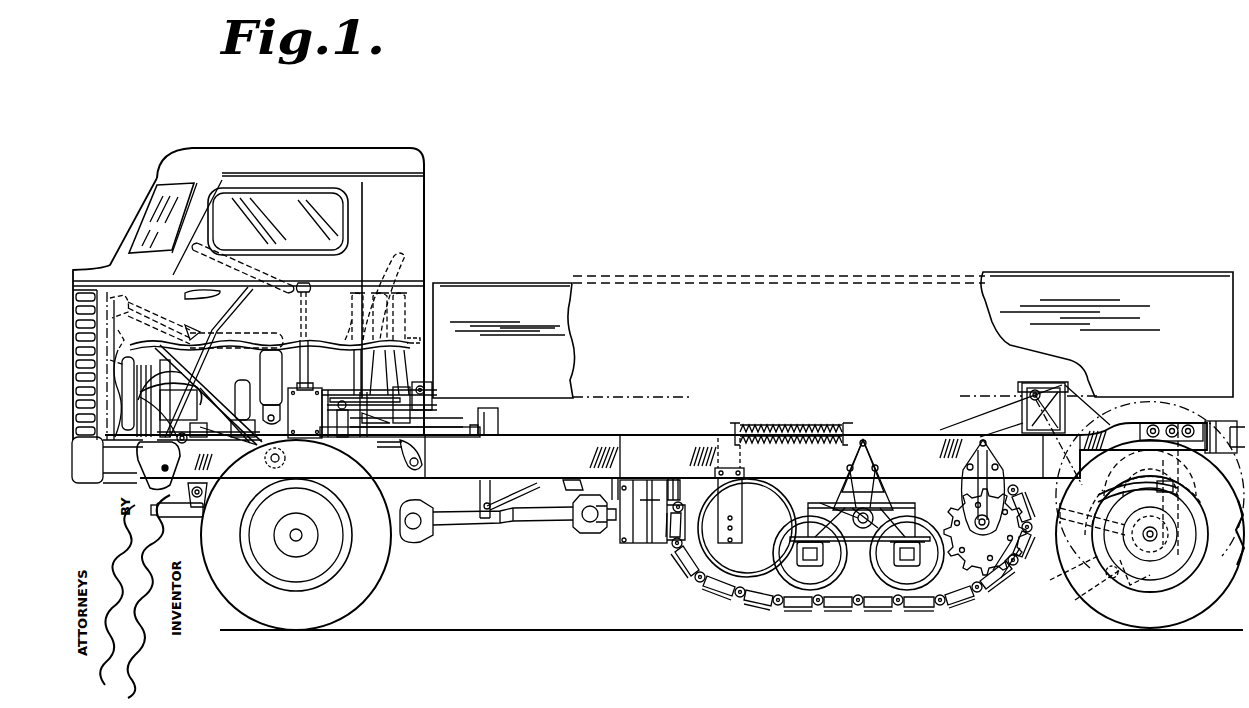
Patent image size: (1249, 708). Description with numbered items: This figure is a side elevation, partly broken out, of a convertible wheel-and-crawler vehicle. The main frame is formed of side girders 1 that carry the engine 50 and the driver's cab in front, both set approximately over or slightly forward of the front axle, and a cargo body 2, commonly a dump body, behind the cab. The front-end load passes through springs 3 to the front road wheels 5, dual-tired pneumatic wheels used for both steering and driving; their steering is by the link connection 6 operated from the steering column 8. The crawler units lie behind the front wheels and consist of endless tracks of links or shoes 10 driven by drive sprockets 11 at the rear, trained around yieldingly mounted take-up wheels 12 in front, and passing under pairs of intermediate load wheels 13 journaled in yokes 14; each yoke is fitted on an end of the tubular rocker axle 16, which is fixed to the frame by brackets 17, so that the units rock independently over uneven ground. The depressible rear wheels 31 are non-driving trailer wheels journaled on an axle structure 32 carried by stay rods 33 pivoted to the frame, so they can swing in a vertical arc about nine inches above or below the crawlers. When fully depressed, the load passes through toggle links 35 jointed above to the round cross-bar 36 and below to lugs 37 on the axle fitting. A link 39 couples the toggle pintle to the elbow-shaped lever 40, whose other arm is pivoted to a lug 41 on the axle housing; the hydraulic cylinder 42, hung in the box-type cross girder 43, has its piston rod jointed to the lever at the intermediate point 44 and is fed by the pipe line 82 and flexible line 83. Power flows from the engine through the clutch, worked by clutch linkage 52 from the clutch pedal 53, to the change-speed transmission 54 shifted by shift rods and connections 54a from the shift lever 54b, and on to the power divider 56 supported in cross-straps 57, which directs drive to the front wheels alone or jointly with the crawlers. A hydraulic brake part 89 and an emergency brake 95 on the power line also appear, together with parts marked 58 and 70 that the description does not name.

The side girders 1 is at (566, 438).
The cargo body 2 is at (553, 284).
The springs 3 is at (207, 500).
The front road wheels 5 is at (382, 578).
The link connection 6 is at (186, 516).
The steering column 8 is at (110, 463).
The links or shoes 10 is at (915, 612).
The drive sprockets 11 is at (990, 562).
The take-up wheels 12 is at (710, 555).
The intermediate load wheels 13 is at (886, 572).
The yokes 14 is at (900, 518).
The tubular axle or rocker beam 16 is at (833, 497).
The brackets 17 is at (888, 492).
The depressible rear wheels 31 is at (1150, 632).
The axle structure 32 is at (1162, 530).
The stay rods 33 is at (1047, 553).
The toggle links 35 is at (1140, 557).
The round cross-bar 36 is at (1178, 423).
The lugs 37 is at (1200, 525).
The link 39 is at (1130, 496).
The elbow-shaped lever 40 is at (1066, 580).
The lug 41 is at (1141, 586).
The hydraulic cylinder 42 is at (1060, 392).
The box-type cross girder 43 is at (1020, 384).
The intermediate point 44 is at (1092, 585).
The engine 50 is at (319, 364).
The clutch linkage 52 is at (258, 446).
The clutch pedal 53 is at (192, 395).
The change-speed transmission 54 is at (448, 426).
The shift rods and connections 54a is at (347, 390).
The shift lever 54b is at (318, 340).
The power divider 56 is at (636, 548).
The cross-straps 57 is at (620, 492).
The propeller shaft 58 is at (530, 523).
The universal joint 70 is at (597, 529).
The pipe line 82 is at (1010, 427).
The flexible line 83 is at (1028, 490).
The hydraulic brake system part 89 is at (390, 442).
The emergency brake 95 is at (490, 413).